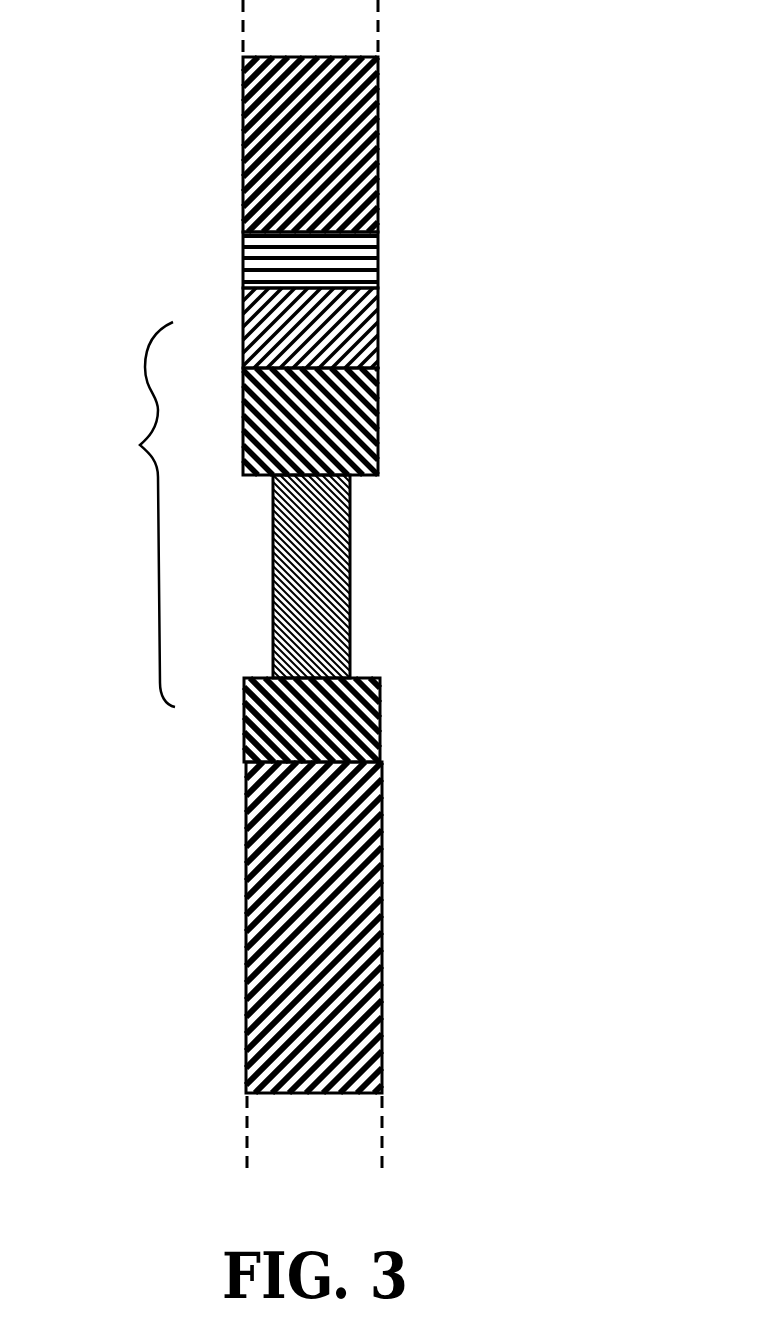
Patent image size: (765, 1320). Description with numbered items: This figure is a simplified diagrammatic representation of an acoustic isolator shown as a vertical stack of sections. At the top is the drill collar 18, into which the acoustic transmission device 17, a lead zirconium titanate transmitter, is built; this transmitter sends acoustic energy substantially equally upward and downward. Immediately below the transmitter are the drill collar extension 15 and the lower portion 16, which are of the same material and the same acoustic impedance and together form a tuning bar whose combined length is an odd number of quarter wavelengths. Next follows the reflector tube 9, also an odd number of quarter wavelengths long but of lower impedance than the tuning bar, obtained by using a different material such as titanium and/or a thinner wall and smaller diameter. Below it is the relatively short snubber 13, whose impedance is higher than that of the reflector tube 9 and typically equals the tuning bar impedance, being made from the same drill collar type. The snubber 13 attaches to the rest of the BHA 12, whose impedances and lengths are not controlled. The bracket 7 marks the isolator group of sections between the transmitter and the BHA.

The drill collar 18 is at (378, 137).
The acoustic transmission device 17 is at (378, 267).
The lower portion 16 is at (378, 327).
The drill collar extension 15 is at (378, 422).
The reflector tube 9 is at (352, 583).
The snubber 13 is at (382, 717).
The rest of the BHA 12 is at (382, 813).
The assembly bracketed region 7 is at (129, 514).